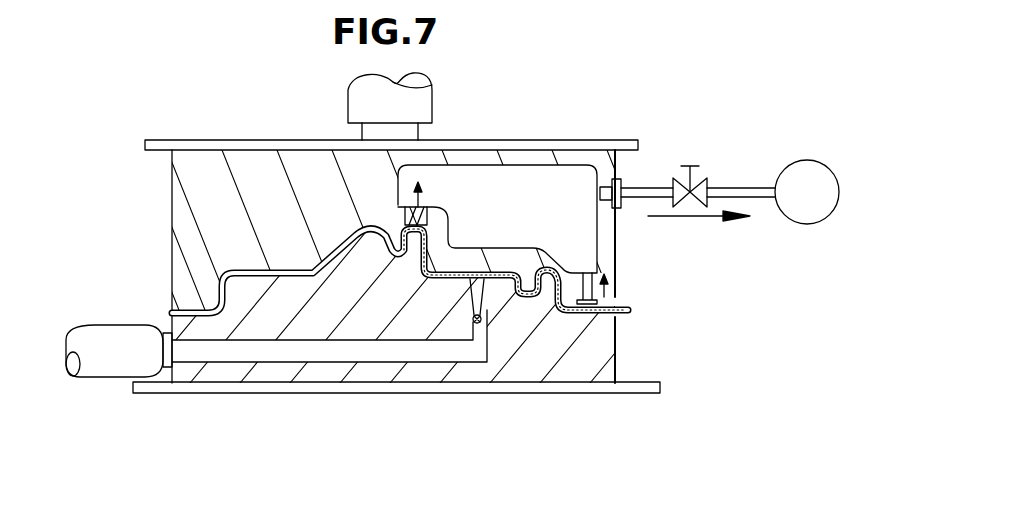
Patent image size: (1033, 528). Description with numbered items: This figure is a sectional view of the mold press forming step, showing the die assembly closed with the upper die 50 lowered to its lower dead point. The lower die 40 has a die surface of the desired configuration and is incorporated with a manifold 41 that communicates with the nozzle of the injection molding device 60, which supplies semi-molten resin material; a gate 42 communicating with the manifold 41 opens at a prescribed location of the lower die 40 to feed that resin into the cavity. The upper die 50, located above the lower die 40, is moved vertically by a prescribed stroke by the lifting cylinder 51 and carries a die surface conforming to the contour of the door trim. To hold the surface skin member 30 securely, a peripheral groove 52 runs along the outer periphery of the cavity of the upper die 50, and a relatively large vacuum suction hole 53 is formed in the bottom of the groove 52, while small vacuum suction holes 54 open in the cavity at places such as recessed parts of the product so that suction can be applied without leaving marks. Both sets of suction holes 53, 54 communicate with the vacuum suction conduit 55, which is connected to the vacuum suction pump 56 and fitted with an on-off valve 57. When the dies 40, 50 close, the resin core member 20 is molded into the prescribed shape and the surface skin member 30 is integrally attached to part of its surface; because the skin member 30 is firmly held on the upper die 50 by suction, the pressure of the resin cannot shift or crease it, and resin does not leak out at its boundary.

The resin core member 20 is at (420, 283).
The surface skin member 30 is at (482, 248).
The lower die 40 is at (439, 301).
The manifold 41 is at (407, 350).
The gate 42 is at (481, 298).
The upper die 50 is at (237, 188).
The lifting cylinder 51 is at (417, 103).
The peripheral groove 52 is at (607, 297).
The vacuum suction hole 53 is at (590, 264).
The small vacuum suction hole 54 is at (401, 230).
The vacuum suction conduit 55 is at (645, 188).
The vacuum suction pump 56 is at (800, 167).
The on-off valve 57 is at (697, 163).
The injection molding device 60 is at (108, 337).